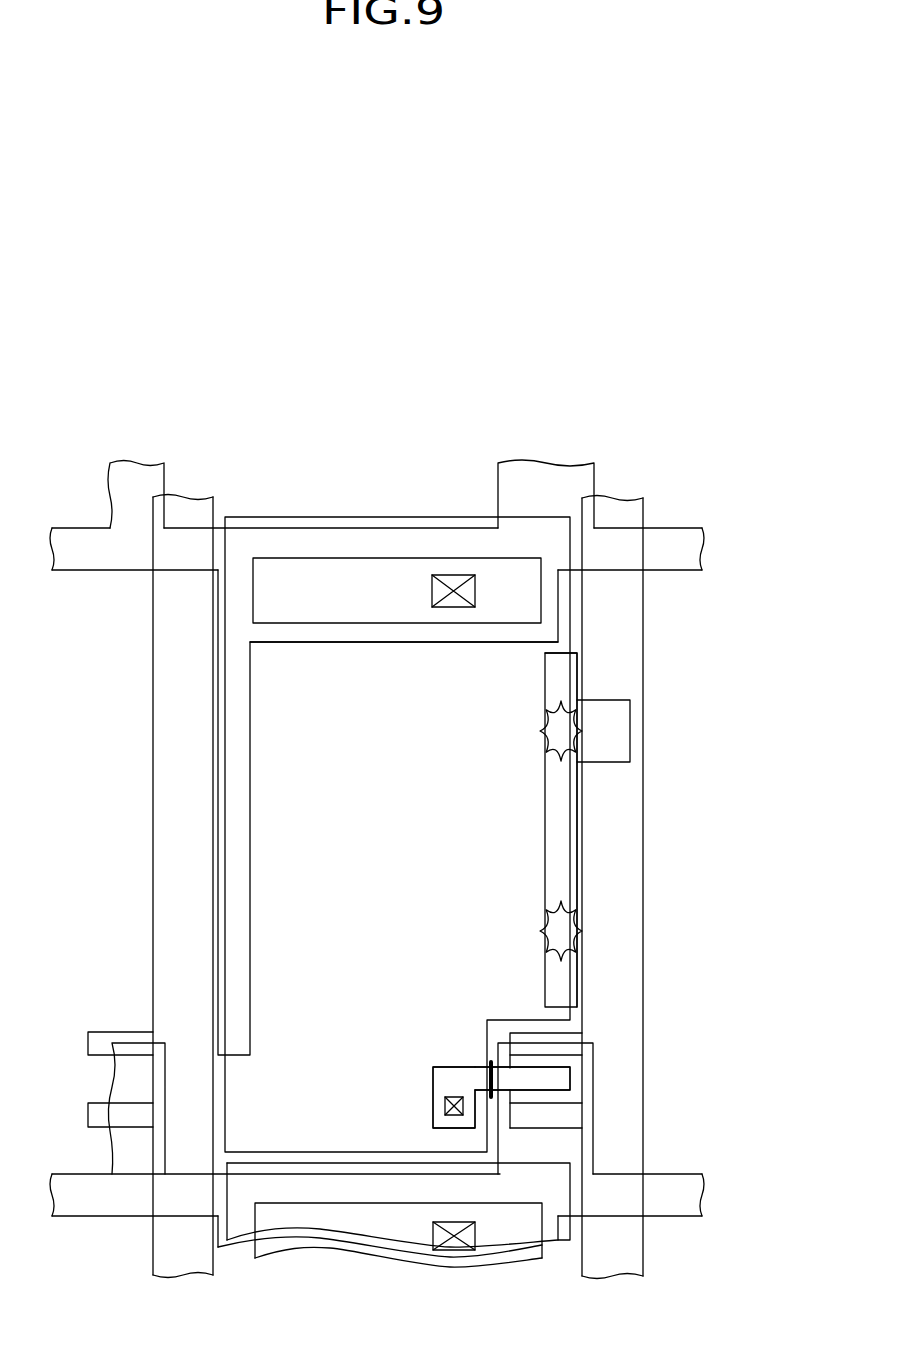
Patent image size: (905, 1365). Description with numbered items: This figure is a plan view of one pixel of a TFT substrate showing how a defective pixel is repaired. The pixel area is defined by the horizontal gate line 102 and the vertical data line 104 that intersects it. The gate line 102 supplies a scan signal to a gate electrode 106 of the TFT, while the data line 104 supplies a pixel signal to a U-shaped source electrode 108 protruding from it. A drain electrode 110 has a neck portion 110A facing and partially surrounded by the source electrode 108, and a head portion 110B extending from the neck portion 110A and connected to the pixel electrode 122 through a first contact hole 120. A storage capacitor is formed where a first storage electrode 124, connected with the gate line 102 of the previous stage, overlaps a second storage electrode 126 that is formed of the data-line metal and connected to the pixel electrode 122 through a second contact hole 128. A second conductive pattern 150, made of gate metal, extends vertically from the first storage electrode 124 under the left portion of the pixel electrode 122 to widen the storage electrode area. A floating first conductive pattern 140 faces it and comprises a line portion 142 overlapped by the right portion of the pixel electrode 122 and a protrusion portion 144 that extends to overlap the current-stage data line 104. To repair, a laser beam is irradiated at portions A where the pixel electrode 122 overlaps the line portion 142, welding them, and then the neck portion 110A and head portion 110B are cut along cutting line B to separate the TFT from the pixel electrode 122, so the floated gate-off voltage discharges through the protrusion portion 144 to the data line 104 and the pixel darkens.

The gate line 102 is at (700, 550).
The data line 104 is at (613, 1270).
The gate electrode 106 is at (593, 1060).
The source electrode 108 is at (540, 1032).
The drain electrode 110 is at (450, 943).
The neck portion 110A is at (548, 1077).
The head portion 110B is at (432, 1082).
The first contact hole 120 is at (442, 1103).
The pixel electrode 122 is at (572, 610).
The first storage electrode 124 is at (312, 643).
The second storage electrode 126 is at (395, 558).
The second contact hole 128 is at (442, 608).
The first conductive pattern 140 is at (753, 822).
The line portion 142 is at (578, 873).
The protrusion portion 144 is at (603, 763).
The second conductive pattern 150 is at (250, 822).
The laser irradiation portion A is at (552, 758).
The cutting line B is at (483, 1077).